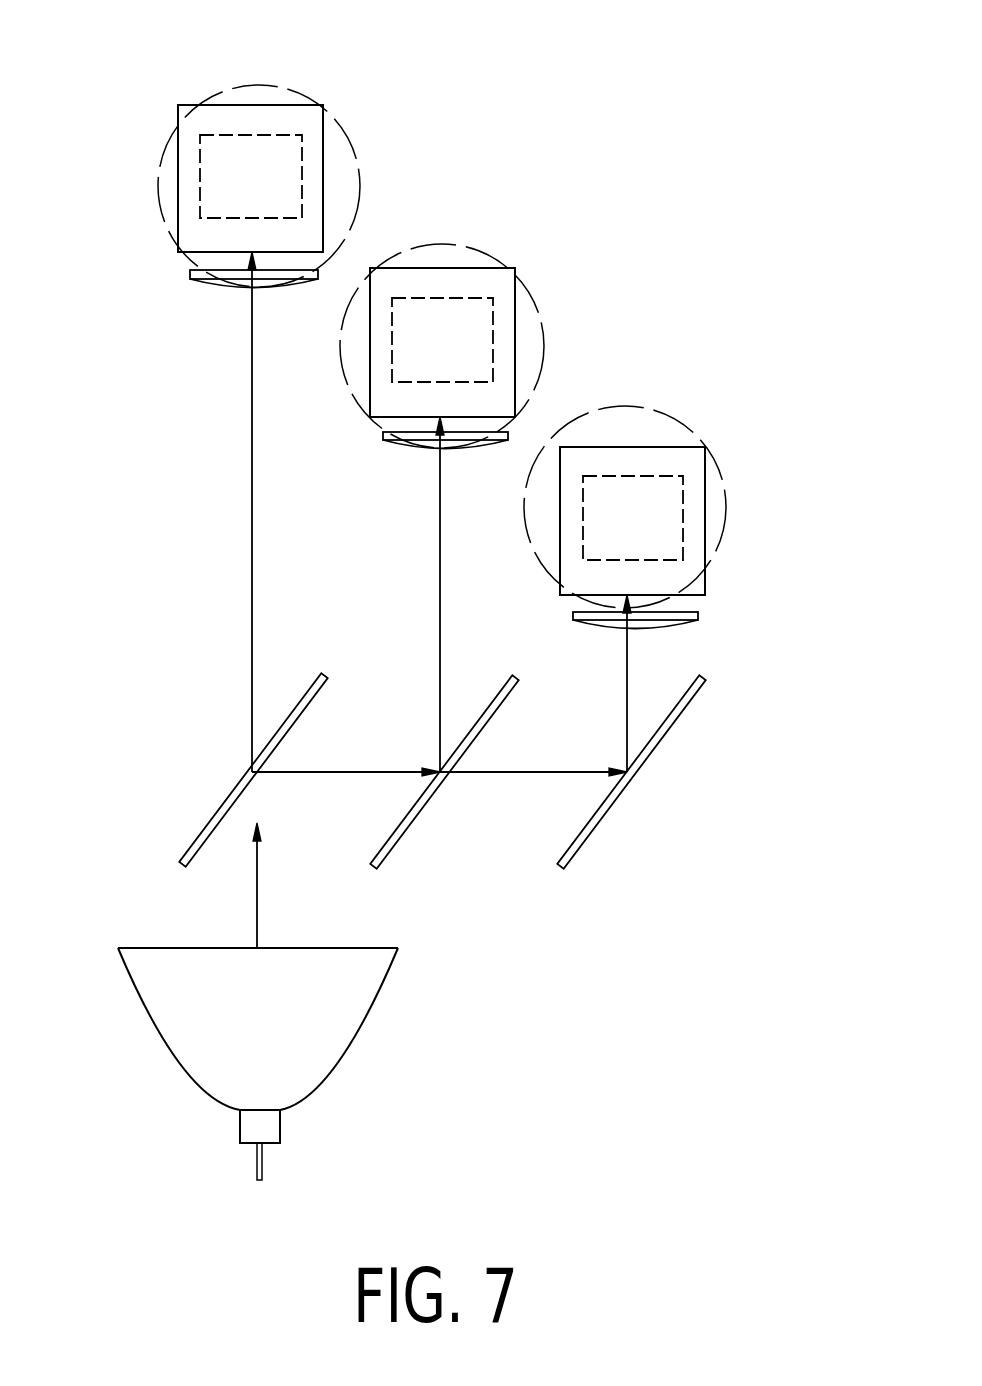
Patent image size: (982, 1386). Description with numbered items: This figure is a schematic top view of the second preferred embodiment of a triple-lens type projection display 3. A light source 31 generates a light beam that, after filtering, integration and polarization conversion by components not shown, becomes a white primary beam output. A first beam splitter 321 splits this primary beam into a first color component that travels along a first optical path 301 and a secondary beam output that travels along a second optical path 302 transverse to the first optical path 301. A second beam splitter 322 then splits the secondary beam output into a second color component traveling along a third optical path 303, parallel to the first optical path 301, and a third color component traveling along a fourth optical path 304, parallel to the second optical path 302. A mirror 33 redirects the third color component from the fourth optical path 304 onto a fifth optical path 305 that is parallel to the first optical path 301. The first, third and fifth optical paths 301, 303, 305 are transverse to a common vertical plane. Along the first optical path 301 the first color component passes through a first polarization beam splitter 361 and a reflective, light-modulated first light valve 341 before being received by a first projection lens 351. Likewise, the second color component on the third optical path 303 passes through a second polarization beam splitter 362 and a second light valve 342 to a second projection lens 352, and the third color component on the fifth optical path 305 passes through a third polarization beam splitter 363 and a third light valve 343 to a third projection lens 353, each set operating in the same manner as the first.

The triple-lens type projection display 3 is at (717, 156).
The light source 31 is at (172, 998).
The first beam splitter 321 is at (197, 840).
The second beam splitter 322 is at (410, 820).
The mirror 33 is at (600, 812).
The first optical path 301 is at (252, 490).
The second optical path 302 is at (355, 772).
The third optical path 303 is at (440, 564).
The fourth optical path 304 is at (538, 772).
The fifth optical path 305 is at (627, 680).
The first light valve 341 is at (302, 201).
The second light valve 342 is at (493, 362).
The third light valve 343 is at (685, 518).
The first projection lens 351 is at (341, 129).
The second projection lens 352 is at (524, 287).
The third projection lens 353 is at (658, 408).
The first polarization beam splitter 361 is at (325, 175).
The second polarization beam splitter 362 is at (515, 337).
The third polarization beam splitter 363 is at (695, 482).